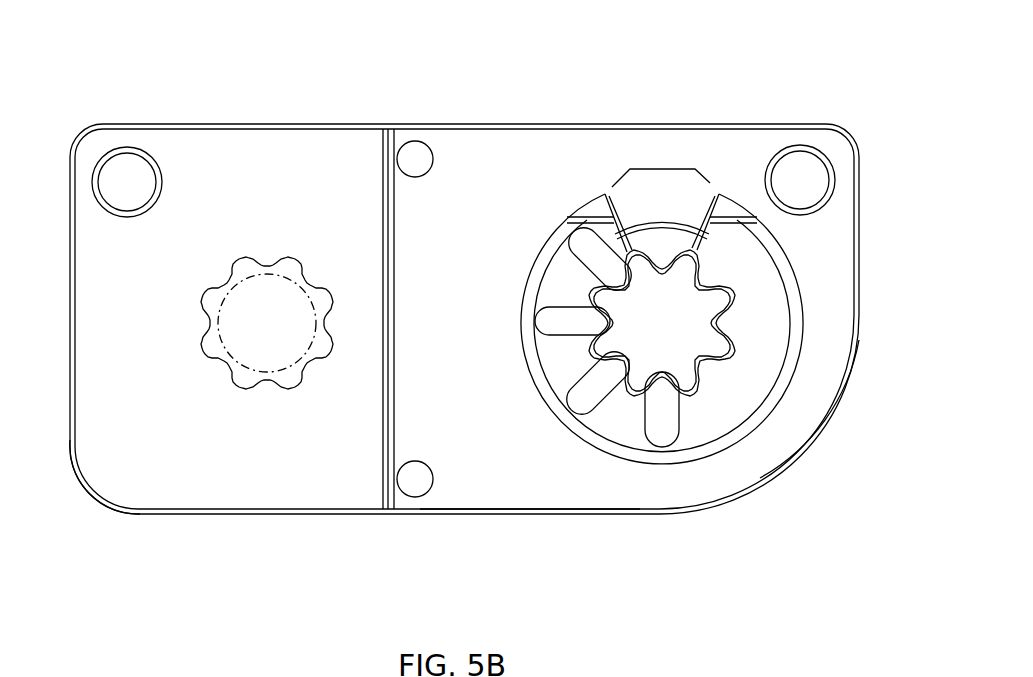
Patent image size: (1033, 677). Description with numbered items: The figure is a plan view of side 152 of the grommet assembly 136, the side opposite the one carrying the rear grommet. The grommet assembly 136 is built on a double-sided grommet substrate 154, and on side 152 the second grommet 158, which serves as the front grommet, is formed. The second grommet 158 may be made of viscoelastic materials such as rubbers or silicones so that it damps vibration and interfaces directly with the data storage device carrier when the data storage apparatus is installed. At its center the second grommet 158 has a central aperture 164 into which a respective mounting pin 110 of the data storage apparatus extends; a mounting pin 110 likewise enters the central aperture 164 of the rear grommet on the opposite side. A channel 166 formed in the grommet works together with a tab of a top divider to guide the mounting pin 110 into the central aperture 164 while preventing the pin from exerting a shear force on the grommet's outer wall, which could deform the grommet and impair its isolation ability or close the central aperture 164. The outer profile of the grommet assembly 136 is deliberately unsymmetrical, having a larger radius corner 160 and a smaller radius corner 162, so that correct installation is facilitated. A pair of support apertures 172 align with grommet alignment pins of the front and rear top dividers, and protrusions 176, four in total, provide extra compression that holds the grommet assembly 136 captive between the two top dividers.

The mounting pin 110 is at (252, 268).
The grommet assembly 136 is at (298, 122).
The side 152 is at (558, 458).
The grommet substrate 154 is at (508, 178).
The second grommet 158 is at (772, 312).
The larger radius corner 160 is at (832, 414).
The smaller radius corner 162 is at (83, 488).
The central aperture 164 is at (290, 334).
The channel 166 is at (661, 168).
The support apertures 172 is at (135, 190).
The protrusions 176 is at (425, 142).